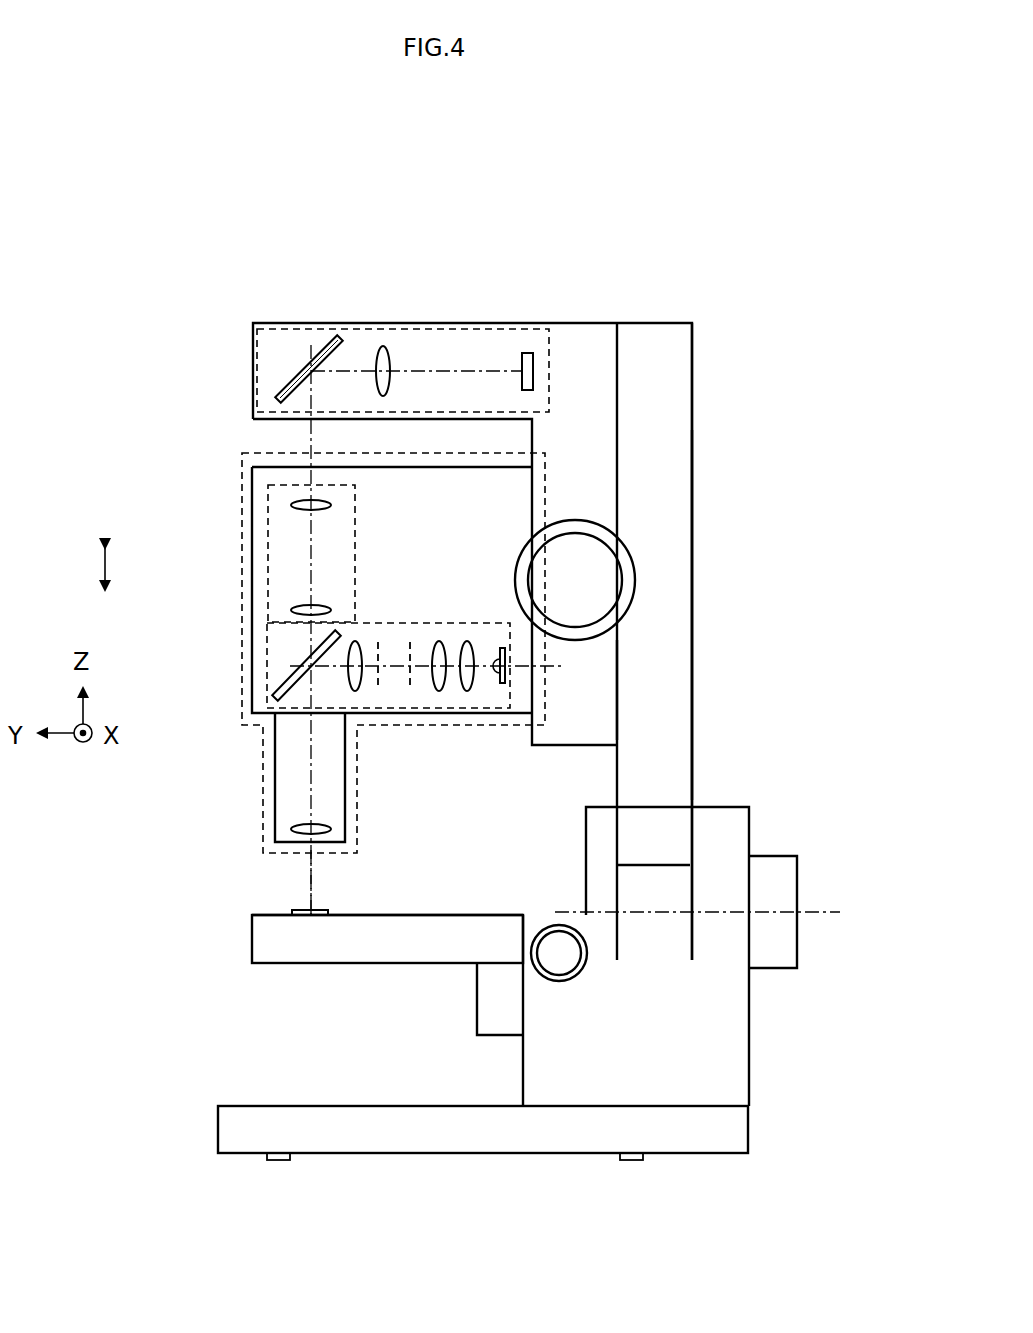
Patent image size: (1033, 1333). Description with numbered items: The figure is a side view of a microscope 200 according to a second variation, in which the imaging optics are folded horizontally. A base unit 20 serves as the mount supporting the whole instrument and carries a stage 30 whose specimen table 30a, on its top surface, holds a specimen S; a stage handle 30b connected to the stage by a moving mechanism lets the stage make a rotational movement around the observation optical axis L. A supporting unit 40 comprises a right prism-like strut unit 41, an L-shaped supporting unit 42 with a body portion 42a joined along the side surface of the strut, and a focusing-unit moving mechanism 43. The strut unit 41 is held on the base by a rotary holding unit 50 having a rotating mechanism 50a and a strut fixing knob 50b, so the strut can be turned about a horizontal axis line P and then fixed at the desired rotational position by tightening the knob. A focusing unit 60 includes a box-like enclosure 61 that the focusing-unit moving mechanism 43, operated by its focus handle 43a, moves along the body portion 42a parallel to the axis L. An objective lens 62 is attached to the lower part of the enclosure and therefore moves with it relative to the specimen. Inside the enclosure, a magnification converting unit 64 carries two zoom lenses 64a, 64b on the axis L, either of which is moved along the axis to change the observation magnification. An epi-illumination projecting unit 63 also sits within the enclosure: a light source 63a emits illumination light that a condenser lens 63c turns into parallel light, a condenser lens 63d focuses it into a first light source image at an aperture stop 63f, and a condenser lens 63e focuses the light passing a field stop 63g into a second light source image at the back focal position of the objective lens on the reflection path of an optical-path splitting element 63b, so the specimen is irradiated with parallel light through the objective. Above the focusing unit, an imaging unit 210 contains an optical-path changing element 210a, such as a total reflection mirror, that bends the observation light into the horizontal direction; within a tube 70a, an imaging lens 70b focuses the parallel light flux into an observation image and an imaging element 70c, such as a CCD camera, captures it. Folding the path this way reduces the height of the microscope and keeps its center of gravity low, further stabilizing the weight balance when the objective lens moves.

The microscope 200 is at (676, 200).
The imaging unit 210 is at (455, 329).
The optical-path changing element 210a is at (282, 388).
The tube 70a is at (303, 345).
The imaging lens 70b is at (383, 345).
The imaging element 70c is at (527, 352).
The supporting unit 40 is at (614, 320).
The L-shaped supporting unit 42 is at (580, 320).
The body portion 42a is at (590, 670).
The strut unit 41 is at (670, 620).
The focusing-unit moving mechanism 43 is at (575, 517).
The focus handle 43a is at (590, 573).
The focusing unit 60 is at (252, 465).
The enclosure 61 is at (268, 497).
The magnification converting unit 64 is at (268, 600).
The zoom lens 64a is at (290, 610).
The zoom lens 64b is at (290, 505).
The epi-illumination projecting unit 63 is at (270, 680).
The light source 63a is at (505, 685).
The optical-path splitting element 63b is at (295, 697).
The condenser lens 63c is at (469, 690).
The condenser lens 63d is at (441, 690).
The condenser lens 63e is at (357, 690).
The aperture stop 63f is at (410, 640).
The field stop 63g is at (378, 640).
The objective lens 62 is at (290, 790).
The stage 30 is at (497, 1000).
The specimen table 30a is at (258, 910).
The stage handle 30b is at (565, 955).
The specimen S is at (297, 912).
The observation optical axis L is at (305, 888).
The horizontal axis line P is at (822, 912).
The rotary holding unit 50 is at (843, 803).
The rotating mechanism 50a is at (663, 888).
The strut fixing knob 50b is at (770, 888).
The base unit 20 is at (568, 1073).